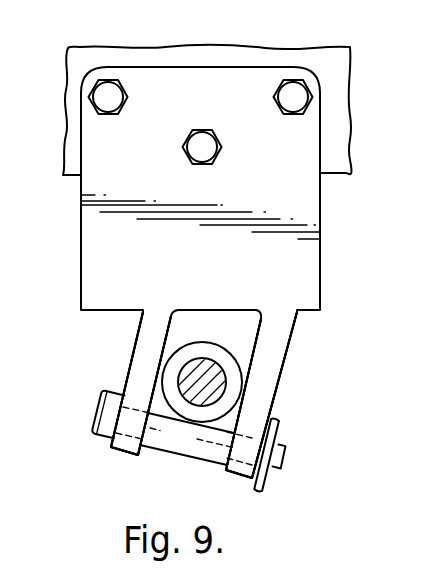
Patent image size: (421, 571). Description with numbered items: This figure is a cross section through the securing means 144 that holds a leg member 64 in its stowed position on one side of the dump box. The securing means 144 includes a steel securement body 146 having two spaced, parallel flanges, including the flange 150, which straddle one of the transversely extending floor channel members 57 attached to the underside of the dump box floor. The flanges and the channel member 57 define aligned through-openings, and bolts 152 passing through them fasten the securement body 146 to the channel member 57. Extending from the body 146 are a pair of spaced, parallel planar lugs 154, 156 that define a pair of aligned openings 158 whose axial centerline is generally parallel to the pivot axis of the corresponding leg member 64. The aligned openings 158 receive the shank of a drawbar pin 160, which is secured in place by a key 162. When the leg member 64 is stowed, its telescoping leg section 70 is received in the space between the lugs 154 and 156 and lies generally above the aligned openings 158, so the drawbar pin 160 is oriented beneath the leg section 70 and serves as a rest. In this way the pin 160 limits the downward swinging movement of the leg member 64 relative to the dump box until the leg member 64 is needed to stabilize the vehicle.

The channel member 57 is at (118, 57).
The securement body 146 is at (80, 234).
The flange 150 is at (208, 73).
The bolts 152 is at (273, 97).
The leg member 64 is at (241, 354).
The leg section 70 is at (233, 358).
The securing means 144 is at (286, 399).
The planar lug 154 is at (122, 451).
The planar lug 156 is at (235, 473).
The aligned opening 158 is at (184, 436).
The drawbar pin 160 is at (99, 404).
The key 162 is at (280, 423).